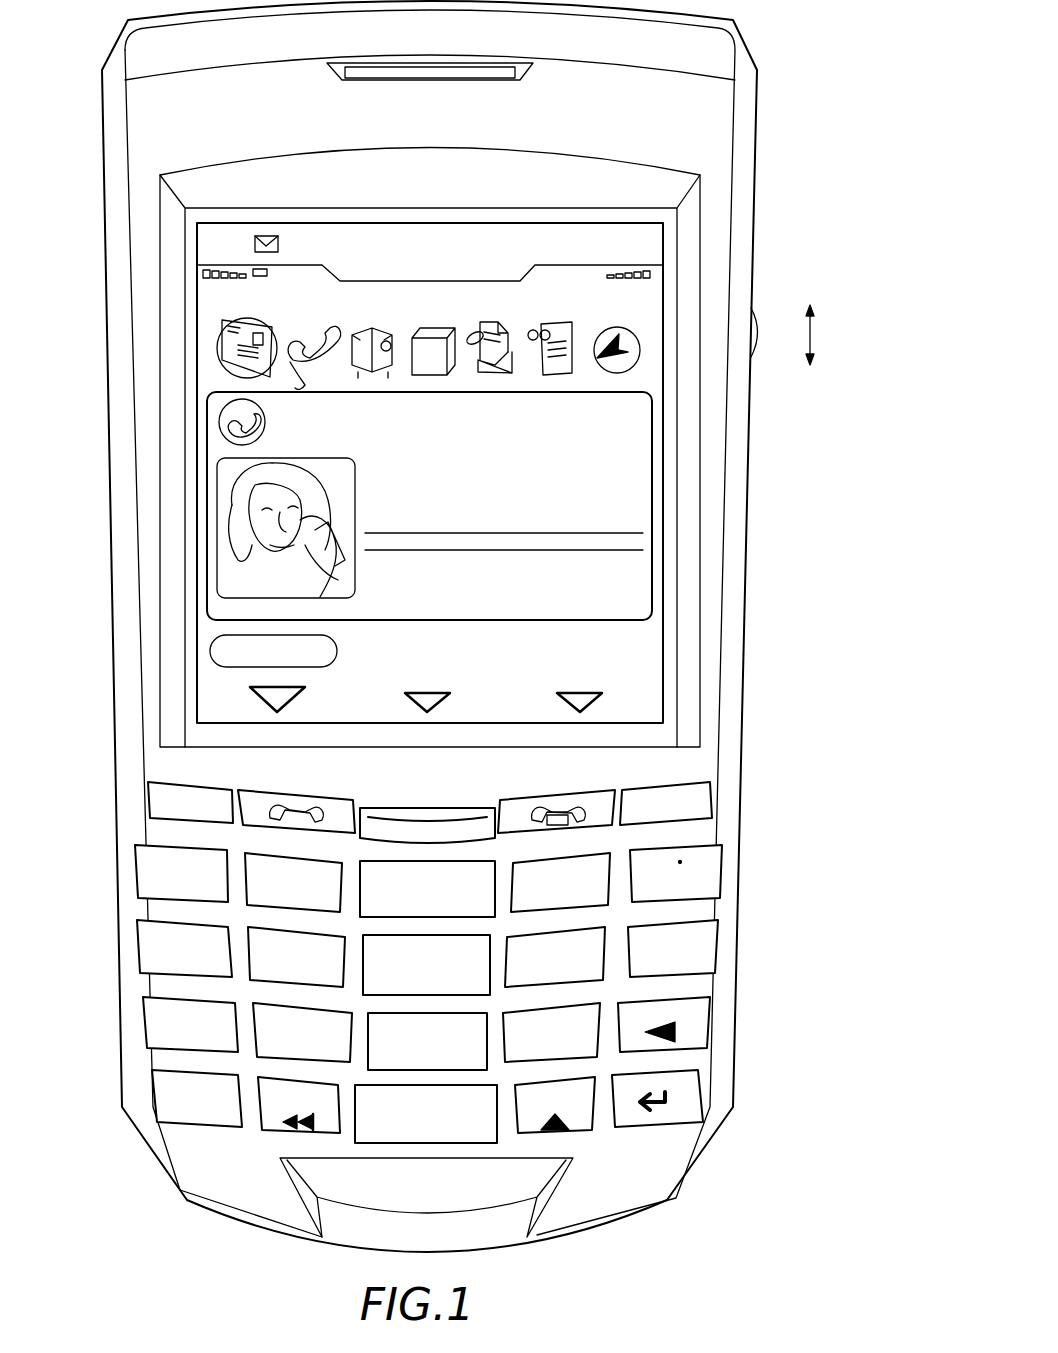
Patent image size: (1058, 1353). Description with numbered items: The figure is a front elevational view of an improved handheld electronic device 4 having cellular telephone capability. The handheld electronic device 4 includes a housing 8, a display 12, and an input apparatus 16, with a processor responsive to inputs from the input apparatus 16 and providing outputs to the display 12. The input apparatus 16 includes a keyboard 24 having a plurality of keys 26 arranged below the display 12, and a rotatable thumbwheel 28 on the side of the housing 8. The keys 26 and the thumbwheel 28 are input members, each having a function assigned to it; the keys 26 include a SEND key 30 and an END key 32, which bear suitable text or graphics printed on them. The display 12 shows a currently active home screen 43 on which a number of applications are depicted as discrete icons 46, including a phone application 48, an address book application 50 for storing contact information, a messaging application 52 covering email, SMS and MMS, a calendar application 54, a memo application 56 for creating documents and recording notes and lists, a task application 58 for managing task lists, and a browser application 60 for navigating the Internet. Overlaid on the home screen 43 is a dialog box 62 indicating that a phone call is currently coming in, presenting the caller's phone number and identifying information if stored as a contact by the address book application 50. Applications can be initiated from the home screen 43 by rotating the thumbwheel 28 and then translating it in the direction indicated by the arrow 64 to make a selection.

The handheld electronic device 4 is at (86, 88).
The housing 8 is at (735, 400).
The display 12 is at (483, 448).
The input apparatus 16 is at (457, 795).
The keyboard 24 is at (715, 907).
The keys 26 is at (142, 1018).
The rotatable thumbwheel 28 is at (762, 320).
The SEND key 30 is at (285, 792).
The END key 32 is at (562, 795).
The home screen 43 is at (650, 287).
The icons 46 is at (440, 337).
The phone application 48 is at (305, 365).
The address book application 50 is at (398, 353).
The messaging application 52 is at (222, 332).
The calendar application 54 is at (454, 348).
The memo application 56 is at (510, 350).
The task application 58 is at (553, 328).
The browser application 60 is at (640, 345).
The dialog box 62 is at (655, 480).
The arrow 64 is at (832, 335).